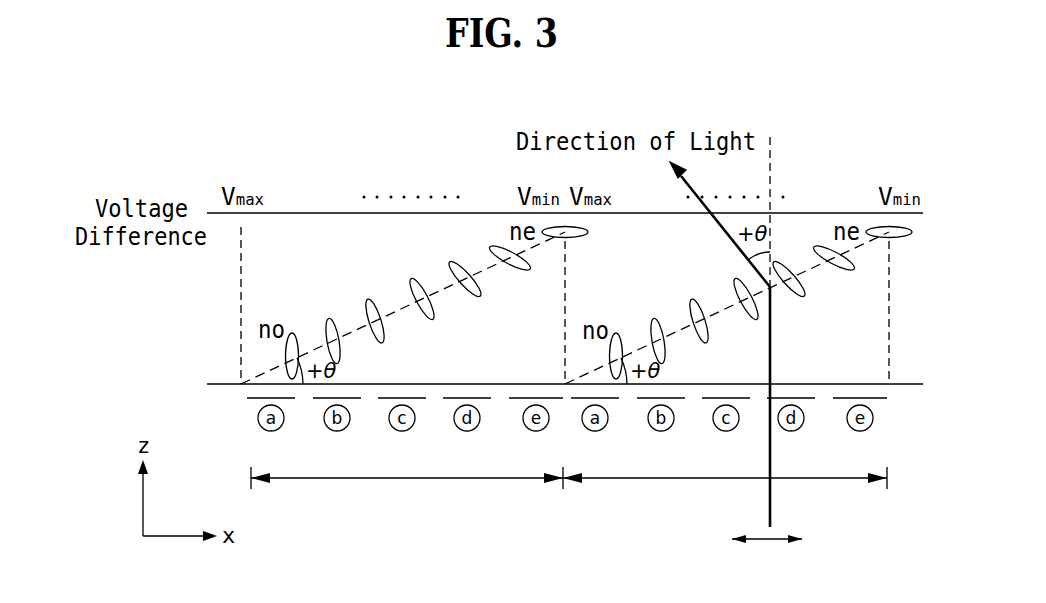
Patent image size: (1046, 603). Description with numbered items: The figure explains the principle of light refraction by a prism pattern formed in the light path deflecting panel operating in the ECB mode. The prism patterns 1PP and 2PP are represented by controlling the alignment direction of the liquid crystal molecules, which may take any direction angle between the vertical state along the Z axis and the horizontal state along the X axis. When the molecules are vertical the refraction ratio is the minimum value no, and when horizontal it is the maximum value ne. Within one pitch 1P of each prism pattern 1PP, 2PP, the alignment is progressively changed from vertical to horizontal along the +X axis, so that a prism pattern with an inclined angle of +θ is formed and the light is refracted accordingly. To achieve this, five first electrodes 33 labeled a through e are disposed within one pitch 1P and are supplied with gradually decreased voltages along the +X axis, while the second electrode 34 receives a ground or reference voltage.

The first electrodes 33 is at (458, 398).
The second electrode 34 is at (320, 213).
The first prism pattern 1PP is at (521, 343).
The second prism pattern 2PP is at (854, 343).
The one pitch 1P is at (569, 488).